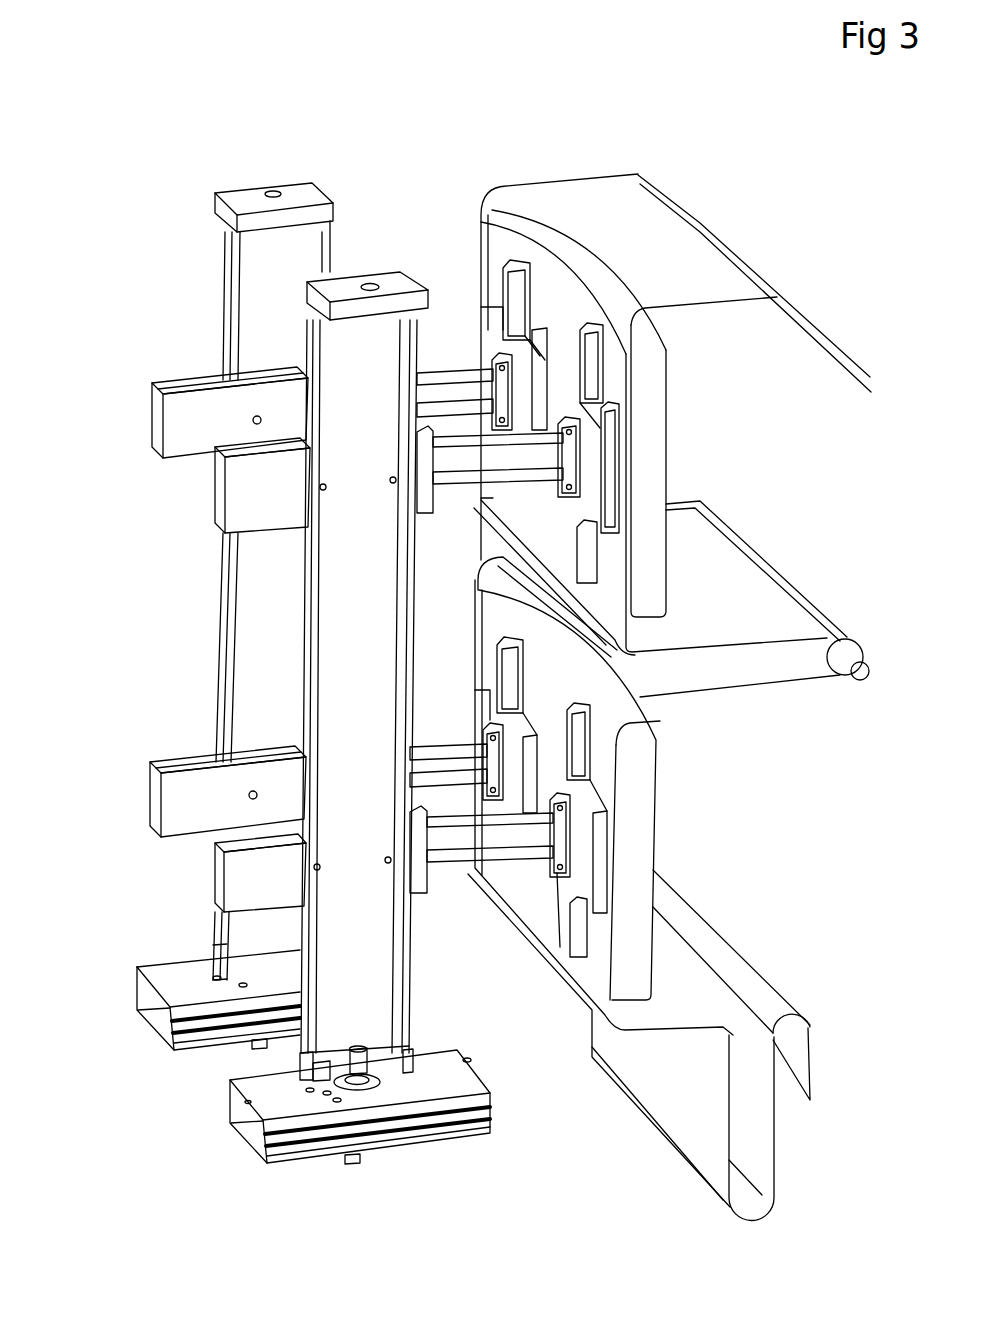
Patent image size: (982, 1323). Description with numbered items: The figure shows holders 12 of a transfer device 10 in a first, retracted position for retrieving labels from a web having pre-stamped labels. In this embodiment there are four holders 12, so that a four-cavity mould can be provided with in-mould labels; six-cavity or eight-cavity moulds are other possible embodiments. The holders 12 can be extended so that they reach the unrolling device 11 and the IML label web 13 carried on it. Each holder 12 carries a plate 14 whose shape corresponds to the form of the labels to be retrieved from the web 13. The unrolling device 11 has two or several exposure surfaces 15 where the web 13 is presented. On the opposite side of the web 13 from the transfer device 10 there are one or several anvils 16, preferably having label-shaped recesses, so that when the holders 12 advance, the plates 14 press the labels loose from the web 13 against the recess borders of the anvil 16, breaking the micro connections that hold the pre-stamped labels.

The transfer device 10 is at (221, 172).
The unrolling device 11 is at (758, 238).
The holder 12 is at (158, 393).
The IML label web 13 is at (820, 333).
The plate 14 is at (593, 437).
The exposure surface 15 is at (613, 360).
The anvil 16 is at (650, 540).